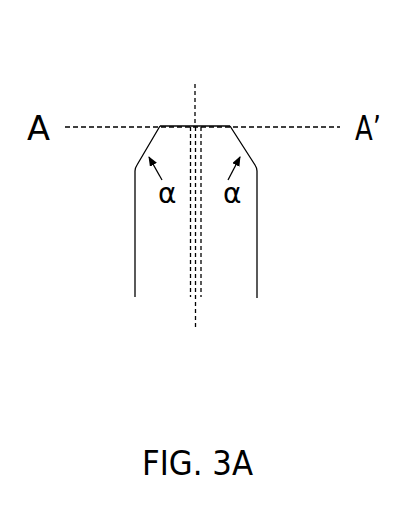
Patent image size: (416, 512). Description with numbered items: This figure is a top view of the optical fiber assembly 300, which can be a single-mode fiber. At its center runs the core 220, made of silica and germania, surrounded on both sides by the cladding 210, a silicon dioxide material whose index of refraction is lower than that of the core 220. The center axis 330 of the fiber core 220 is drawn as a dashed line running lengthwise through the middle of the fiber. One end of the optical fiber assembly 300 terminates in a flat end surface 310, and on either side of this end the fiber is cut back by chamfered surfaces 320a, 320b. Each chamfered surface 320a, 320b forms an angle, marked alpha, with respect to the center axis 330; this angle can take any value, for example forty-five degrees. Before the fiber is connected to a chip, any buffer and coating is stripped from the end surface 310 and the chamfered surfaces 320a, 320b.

The optical fiber assembly 300 is at (135, 100).
The end surface 310 is at (215, 124).
The chamfered surface 320a is at (147, 141).
The chamfered surface 320b is at (246, 140).
The cladding 210 is at (153, 290).
The center axis 330 is at (192, 262).
The core 220 is at (203, 260).